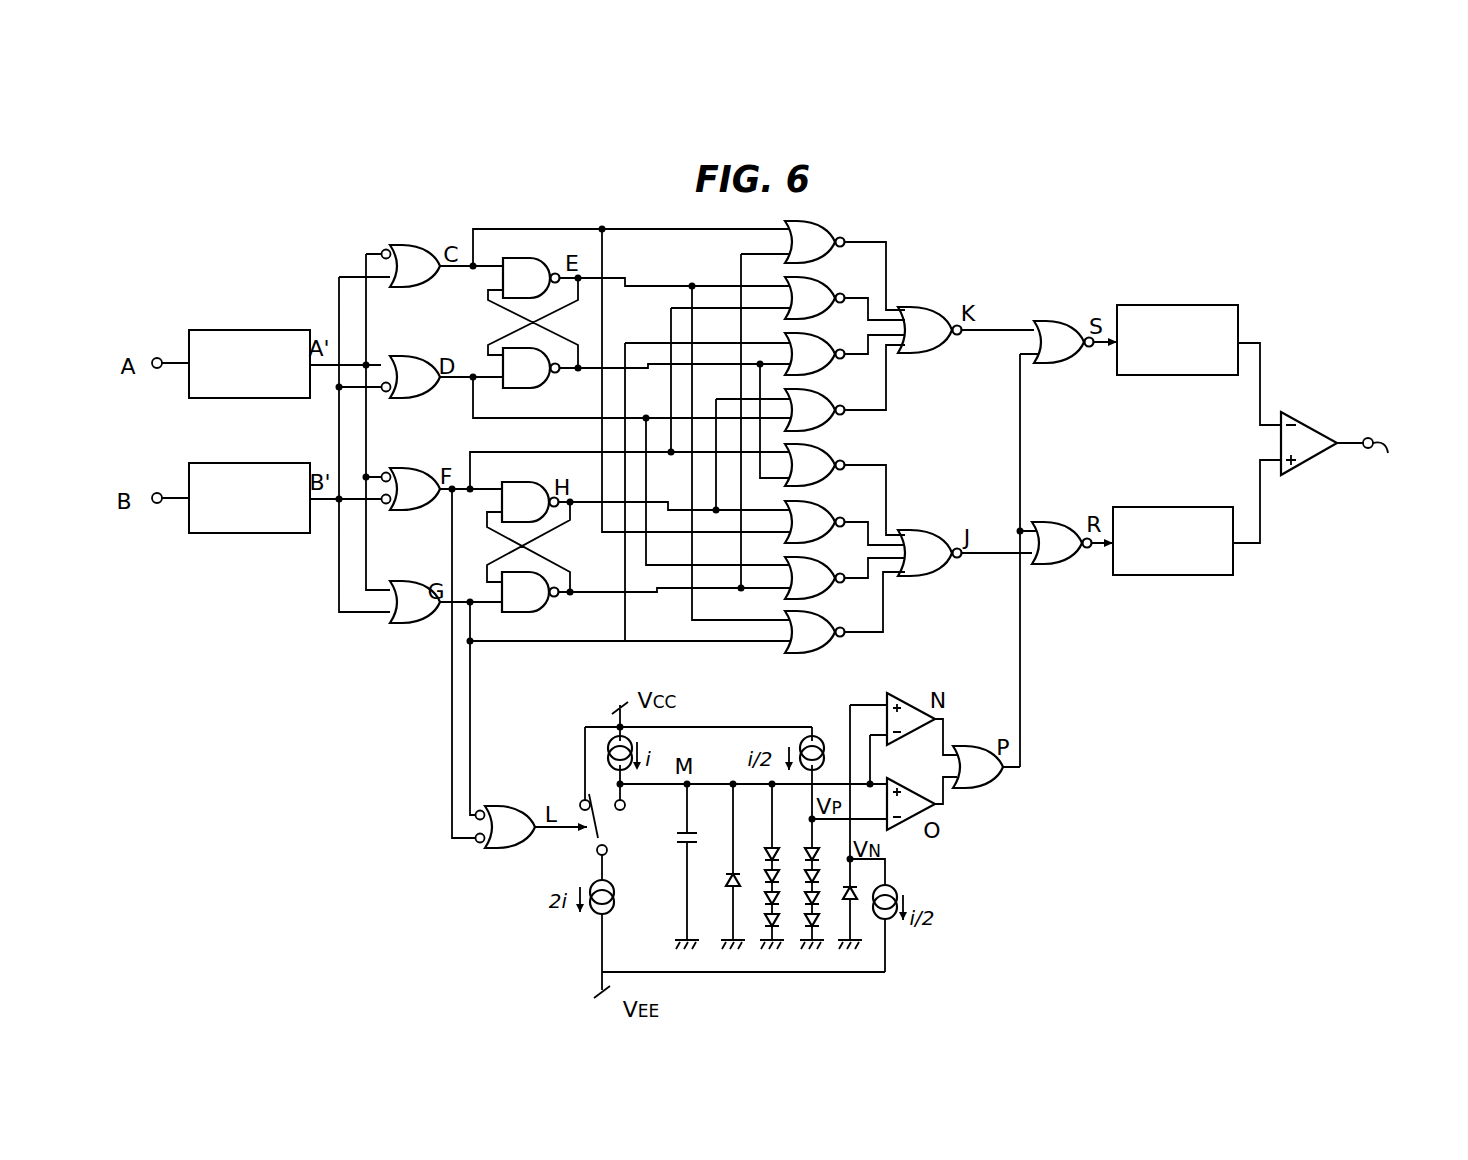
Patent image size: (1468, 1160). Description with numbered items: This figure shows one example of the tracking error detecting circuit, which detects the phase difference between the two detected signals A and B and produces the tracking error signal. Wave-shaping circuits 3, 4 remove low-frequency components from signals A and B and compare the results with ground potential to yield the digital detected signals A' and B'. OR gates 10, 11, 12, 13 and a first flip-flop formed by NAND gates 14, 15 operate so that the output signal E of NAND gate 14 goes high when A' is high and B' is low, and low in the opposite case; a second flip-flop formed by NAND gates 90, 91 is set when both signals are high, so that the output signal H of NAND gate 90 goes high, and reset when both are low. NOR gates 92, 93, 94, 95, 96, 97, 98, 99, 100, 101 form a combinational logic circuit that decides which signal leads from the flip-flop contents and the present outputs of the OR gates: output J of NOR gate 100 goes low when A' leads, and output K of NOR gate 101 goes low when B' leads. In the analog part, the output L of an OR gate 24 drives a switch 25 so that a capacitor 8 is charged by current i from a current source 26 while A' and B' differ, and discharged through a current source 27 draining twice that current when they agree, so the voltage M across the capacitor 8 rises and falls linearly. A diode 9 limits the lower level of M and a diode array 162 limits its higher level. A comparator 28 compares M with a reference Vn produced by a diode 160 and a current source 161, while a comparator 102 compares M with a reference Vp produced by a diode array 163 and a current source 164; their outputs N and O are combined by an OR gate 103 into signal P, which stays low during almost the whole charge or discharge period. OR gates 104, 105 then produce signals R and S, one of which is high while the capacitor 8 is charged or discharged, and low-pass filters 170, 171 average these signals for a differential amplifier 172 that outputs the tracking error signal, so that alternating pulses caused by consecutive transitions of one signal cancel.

The wave-shaping circuit 3 is at (247, 330).
The wave-shaping circuit 4 is at (260, 463).
The OR gate 10 is at (406, 246).
The OR gate 11 is at (425, 348).
The OR gate 12 is at (393, 470).
The OR gate 13 is at (414, 582).
The NAND gate 14 is at (517, 258).
The NAND gate 15 is at (540, 388).
The NAND gate 90 is at (543, 482).
The NAND gate 91 is at (535, 612).
The NOR gate 92 is at (832, 645).
The NOR gate 93 is at (832, 591).
The NOR gate 94 is at (830, 535).
The NOR gate 95 is at (832, 478).
The NOR gate 96 is at (832, 423).
The NOR gate 97 is at (832, 367).
The NOR gate 98 is at (830, 311).
The NOR gate 99 is at (832, 255).
The NOR gate 100 is at (940, 576).
The NOR gate 101 is at (915, 353).
The comparator 102 is at (914, 821).
The OR gate 103 is at (992, 783).
The OR gate 104 is at (1068, 563).
The OR gate 105 is at (1067, 362).
The low-pass filter 170 is at (1176, 305).
The low-pass filter 171 is at (1187, 575).
The differential amplifier 172 is at (1316, 460).
The OR gate 24 is at (517, 806).
The switch 25 is at (588, 838).
The current source 26 is at (606, 752).
The current source 27 is at (616, 897).
The comparator 28 is at (912, 704).
The capacitor 8 is at (677, 838).
The diode 9 is at (726, 880).
The diode 160 is at (858, 892).
The current source 161 is at (893, 920).
The diode array 162 is at (757, 905).
The diode array 163 is at (800, 902).
The current source 164 is at (813, 741).